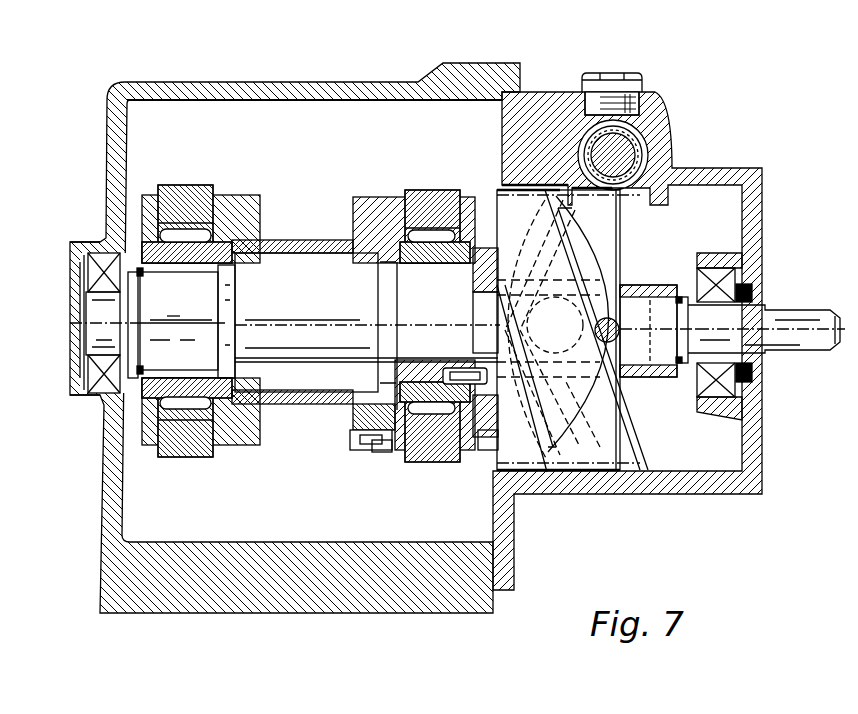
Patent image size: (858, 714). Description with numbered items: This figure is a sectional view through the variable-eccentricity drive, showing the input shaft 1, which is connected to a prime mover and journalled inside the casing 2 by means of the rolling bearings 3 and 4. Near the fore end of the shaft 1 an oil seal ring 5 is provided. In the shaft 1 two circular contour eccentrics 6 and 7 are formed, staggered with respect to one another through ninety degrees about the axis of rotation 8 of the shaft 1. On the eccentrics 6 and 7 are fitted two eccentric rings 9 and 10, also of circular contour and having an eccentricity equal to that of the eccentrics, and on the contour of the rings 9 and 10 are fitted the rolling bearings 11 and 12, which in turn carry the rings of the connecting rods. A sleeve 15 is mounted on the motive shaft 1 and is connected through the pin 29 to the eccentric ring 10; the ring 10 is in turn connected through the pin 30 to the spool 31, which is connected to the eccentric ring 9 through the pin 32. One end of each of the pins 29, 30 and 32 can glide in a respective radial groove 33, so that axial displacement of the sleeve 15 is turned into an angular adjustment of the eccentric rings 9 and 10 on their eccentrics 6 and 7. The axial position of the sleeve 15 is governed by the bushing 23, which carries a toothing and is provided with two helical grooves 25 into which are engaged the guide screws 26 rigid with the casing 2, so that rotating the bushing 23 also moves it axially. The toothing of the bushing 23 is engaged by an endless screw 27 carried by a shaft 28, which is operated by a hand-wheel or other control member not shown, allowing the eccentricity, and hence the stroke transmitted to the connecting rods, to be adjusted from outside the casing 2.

The input shaft 1 is at (795, 322).
The casing 2 is at (152, 82).
The rolling bearing 3 is at (765, 262).
The rolling bearing 4 is at (95, 240).
The oil seal ring 5 is at (760, 377).
The eccentric 6 is at (176, 323).
The eccentric 7 is at (417, 283).
The axis of rotation 8 is at (105, 325).
The eccentric ring 9 is at (177, 228).
The eccentric ring 10 is at (432, 445).
The rolling bearing 11 is at (198, 222).
The rolling bearing 12 is at (423, 235).
The sleeve 15 is at (484, 248).
The bushing 23 is at (602, 433).
The helical groove 25 is at (567, 187).
The guide screw 26 is at (572, 208).
The endless screw 27 is at (617, 160).
The shaft 28 is at (640, 95).
The pin 29 is at (458, 375).
The pin 30 is at (367, 445).
The spool 31 is at (302, 240).
The pin 32 is at (252, 322).
The radial groove 33 is at (390, 446).